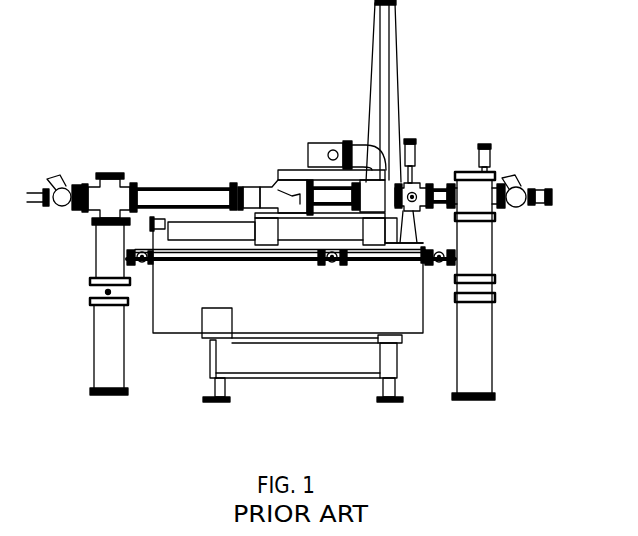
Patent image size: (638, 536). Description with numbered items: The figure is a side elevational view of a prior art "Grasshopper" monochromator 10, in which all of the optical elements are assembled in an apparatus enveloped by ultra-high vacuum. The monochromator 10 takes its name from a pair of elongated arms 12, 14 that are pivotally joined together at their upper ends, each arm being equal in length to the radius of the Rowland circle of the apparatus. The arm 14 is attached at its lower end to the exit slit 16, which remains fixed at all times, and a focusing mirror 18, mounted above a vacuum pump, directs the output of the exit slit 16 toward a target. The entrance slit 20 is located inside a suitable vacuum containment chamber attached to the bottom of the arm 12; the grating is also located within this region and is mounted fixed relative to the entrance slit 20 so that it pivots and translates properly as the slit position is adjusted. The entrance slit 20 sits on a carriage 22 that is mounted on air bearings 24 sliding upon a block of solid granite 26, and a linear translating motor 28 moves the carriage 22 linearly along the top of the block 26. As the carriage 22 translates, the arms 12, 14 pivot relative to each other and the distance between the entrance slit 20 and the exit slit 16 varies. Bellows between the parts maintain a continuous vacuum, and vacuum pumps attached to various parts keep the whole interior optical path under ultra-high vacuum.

The Grasshopper monochromator 10 is at (165, 412).
The elongated arm 12 is at (372, 65).
The elongated arm 14 is at (395, 43).
The exit slit 16 is at (401, 135).
The focusing mirror 18 is at (477, 200).
The entrance slit 20 is at (363, 150).
The carriage 22 is at (312, 230).
The air bearings 24 is at (266, 238).
The block of solid granite 26 is at (315, 320).
The linear translating motor 28 is at (150, 223).